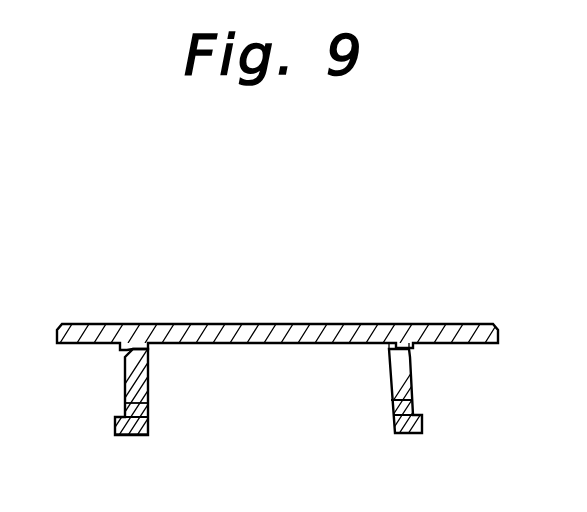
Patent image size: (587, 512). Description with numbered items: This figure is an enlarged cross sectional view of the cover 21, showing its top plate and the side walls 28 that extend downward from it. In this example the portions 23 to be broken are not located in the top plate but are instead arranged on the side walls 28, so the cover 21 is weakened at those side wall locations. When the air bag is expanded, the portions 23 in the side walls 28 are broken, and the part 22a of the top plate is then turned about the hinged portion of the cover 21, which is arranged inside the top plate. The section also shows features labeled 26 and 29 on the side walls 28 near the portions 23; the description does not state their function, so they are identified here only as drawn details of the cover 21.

The cover 21 is at (277, 289).
The part 22a is at (273, 331).
The portion to be broken 23 is at (264, 403).
The engaging lip 26 is at (140, 348).
The side wall 28 is at (405, 378).
The foot portion 29 is at (98, 426).